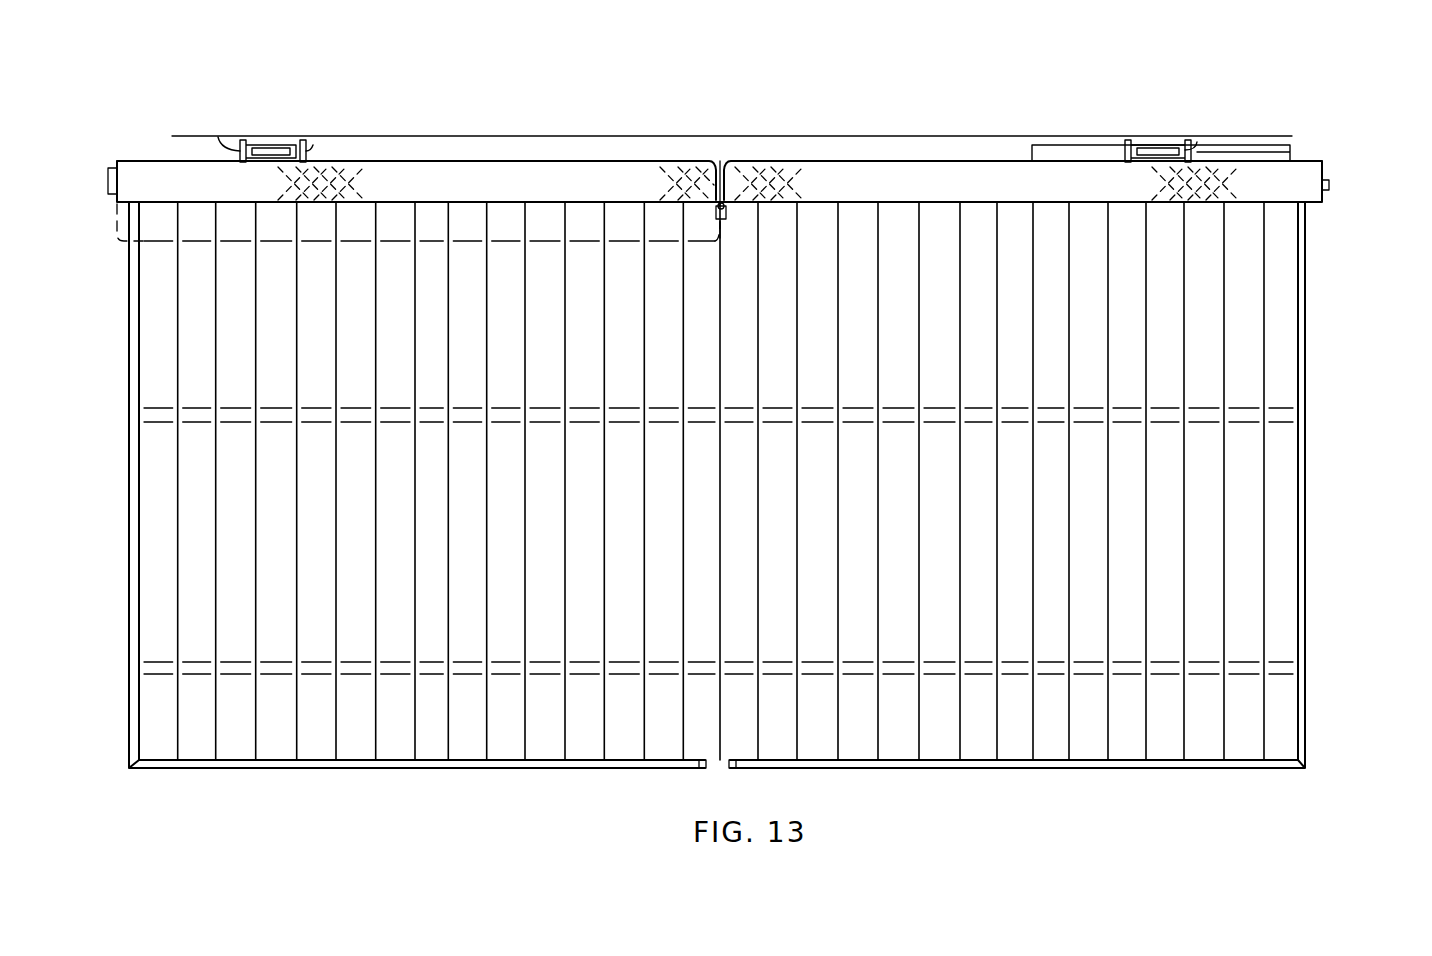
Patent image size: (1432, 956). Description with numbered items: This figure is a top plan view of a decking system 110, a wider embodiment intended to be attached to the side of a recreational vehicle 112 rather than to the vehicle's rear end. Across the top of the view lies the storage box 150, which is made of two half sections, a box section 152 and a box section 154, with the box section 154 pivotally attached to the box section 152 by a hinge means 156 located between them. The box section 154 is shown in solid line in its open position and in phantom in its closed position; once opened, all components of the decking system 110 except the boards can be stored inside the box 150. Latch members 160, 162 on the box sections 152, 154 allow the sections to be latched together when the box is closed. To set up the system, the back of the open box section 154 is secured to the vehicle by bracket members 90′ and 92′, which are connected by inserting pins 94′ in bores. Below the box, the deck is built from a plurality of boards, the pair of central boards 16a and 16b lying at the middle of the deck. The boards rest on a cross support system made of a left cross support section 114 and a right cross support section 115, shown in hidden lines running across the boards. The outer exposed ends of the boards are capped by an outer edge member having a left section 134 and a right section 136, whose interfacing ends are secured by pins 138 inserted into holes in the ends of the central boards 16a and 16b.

The decking system 110 is at (1327, 449).
The recreational vehicle 112 is at (174, 136).
The left cross support section 114 is at (278, 421).
The right cross support section 115 is at (1086, 425).
The central board 16a is at (740, 736).
The central board 16b is at (700, 733).
The left section of outer edge member 134 is at (358, 768).
The right section of outer edge member 136 is at (1172, 766).
The pins 138 is at (698, 765).
The storage box 150 is at (600, 187).
The box section 152 is at (505, 178).
The box section 154 is at (435, 216).
The hinge means 156 is at (763, 191).
The latch member 160 is at (115, 196).
The latch member 162 is at (1326, 186).
The bracket member 90′ is at (278, 142).
The bracket member 92′ is at (240, 122).
The pins 94′ is at (313, 146).